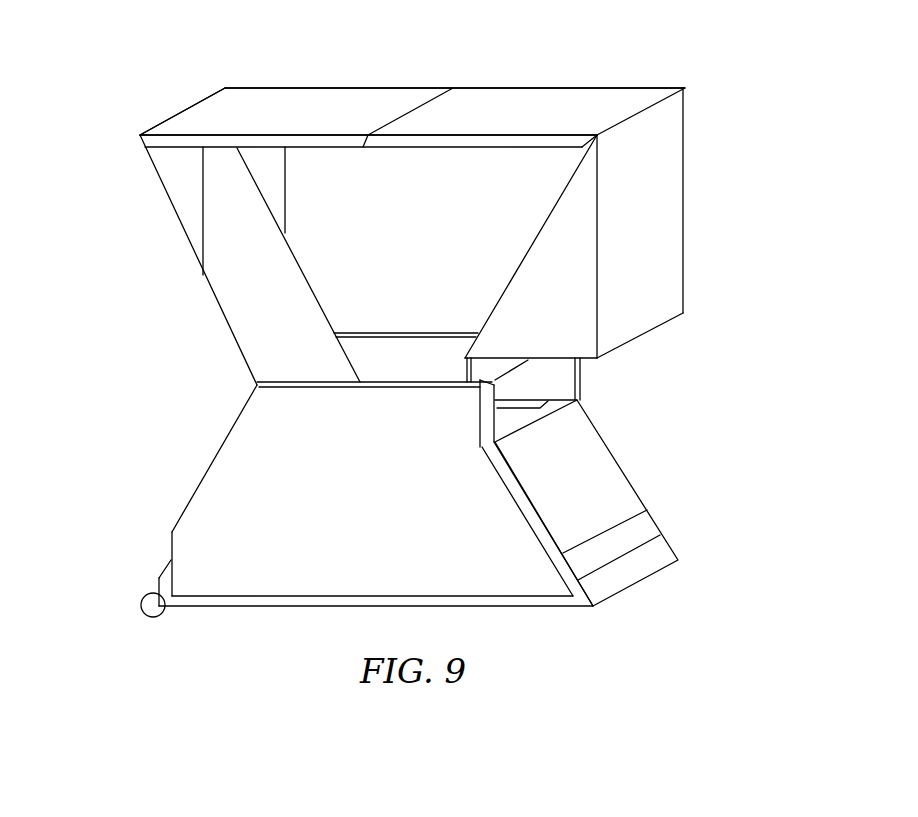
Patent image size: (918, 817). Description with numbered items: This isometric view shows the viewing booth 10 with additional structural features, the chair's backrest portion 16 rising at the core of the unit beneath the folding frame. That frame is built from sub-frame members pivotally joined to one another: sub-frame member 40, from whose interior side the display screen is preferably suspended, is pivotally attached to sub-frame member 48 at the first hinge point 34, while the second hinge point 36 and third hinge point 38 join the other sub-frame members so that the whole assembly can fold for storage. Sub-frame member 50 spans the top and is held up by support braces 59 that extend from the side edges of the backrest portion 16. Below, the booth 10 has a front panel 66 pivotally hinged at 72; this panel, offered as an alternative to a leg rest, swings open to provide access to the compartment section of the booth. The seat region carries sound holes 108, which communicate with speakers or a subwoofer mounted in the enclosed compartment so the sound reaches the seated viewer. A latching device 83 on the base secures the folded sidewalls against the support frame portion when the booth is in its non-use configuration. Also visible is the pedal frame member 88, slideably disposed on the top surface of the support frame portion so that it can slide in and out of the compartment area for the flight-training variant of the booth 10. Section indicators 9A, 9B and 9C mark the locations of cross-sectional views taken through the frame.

The viewing booth 10 is at (732, 228).
The backrest portion 16 is at (243, 315).
The first hinge point 34 is at (685, 88).
The second hinge point 36 is at (418, 107).
The third hinge point 38 is at (200, 100).
The sub-frame member 40 is at (668, 255).
The sub-frame member 48 is at (478, 98).
The sub-frame member 50 is at (277, 102).
The support braces 59 is at (183, 200).
The front panel 66 is at (603, 480).
The hinge 72 is at (580, 393).
The latching device 83 is at (580, 607).
The pedal frame member 88 is at (645, 535).
The sound holes 108 is at (523, 405).
The section line 9A is at (128, 72).
The section line 9B is at (349, 87).
The section line 9C is at (585, 70).